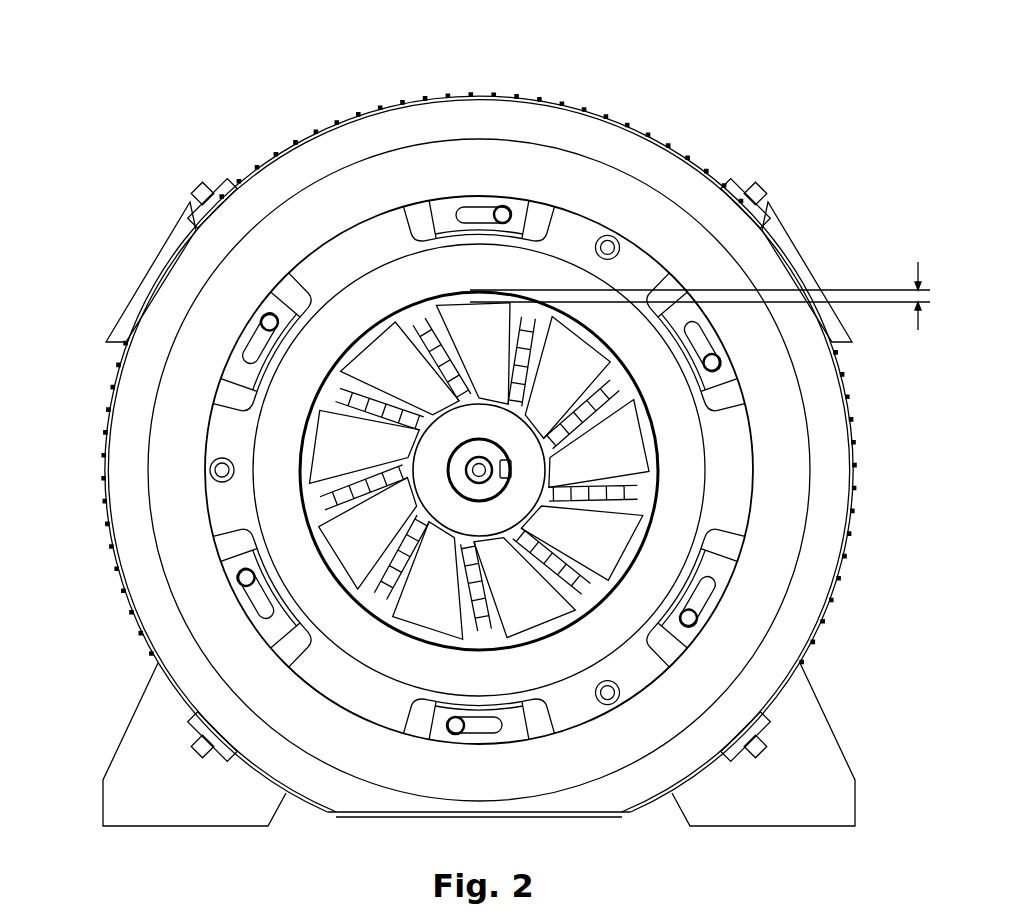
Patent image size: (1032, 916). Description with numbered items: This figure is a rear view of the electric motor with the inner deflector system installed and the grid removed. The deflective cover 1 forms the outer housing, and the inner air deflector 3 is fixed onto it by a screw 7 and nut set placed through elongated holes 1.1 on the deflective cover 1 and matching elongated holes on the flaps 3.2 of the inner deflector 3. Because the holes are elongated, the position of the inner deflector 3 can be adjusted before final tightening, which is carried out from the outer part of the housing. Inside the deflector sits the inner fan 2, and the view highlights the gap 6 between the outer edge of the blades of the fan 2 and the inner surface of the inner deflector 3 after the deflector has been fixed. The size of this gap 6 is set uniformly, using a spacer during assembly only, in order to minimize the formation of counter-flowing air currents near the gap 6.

The deflective cover 1 is at (563, 167).
The elongated holes 1.1 is at (267, 308).
The inner fan 2 is at (335, 455).
The inner air deflector 3 is at (472, 390).
The flaps 3.2 is at (725, 472).
The gap 6 is at (907, 241).
The screw 7 is at (610, 690).